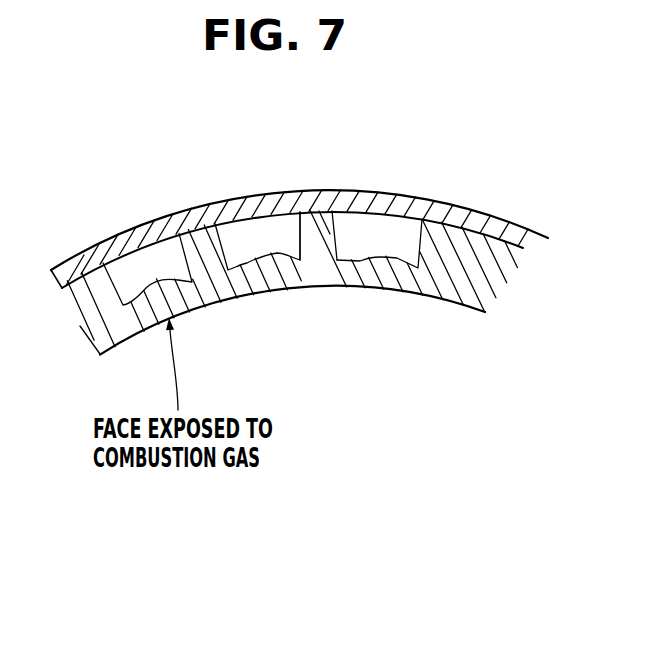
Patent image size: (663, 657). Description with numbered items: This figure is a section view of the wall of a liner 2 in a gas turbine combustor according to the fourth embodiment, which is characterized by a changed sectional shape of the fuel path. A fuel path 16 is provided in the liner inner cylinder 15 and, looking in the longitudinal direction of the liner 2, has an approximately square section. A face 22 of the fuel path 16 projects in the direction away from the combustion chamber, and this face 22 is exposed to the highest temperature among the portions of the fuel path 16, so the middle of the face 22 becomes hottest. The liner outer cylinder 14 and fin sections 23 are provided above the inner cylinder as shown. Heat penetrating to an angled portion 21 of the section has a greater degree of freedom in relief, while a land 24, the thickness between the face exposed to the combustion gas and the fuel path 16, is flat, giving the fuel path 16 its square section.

The liner 2 is at (287, 188).
The liner outer cylinder 14 is at (402, 200).
The angled portion 21 is at (408, 268).
The face 22 is at (128, 250).
The fin sections 23 is at (200, 247).
The land 24 is at (268, 262).
The liner inner cylinder 15 is at (302, 282).
The fuel path 16 is at (363, 237).